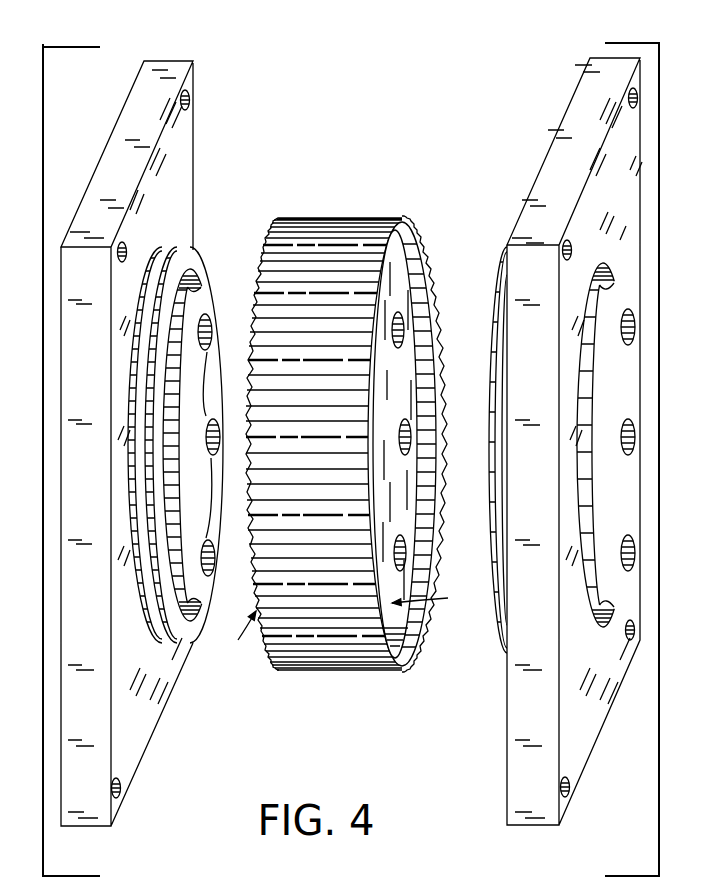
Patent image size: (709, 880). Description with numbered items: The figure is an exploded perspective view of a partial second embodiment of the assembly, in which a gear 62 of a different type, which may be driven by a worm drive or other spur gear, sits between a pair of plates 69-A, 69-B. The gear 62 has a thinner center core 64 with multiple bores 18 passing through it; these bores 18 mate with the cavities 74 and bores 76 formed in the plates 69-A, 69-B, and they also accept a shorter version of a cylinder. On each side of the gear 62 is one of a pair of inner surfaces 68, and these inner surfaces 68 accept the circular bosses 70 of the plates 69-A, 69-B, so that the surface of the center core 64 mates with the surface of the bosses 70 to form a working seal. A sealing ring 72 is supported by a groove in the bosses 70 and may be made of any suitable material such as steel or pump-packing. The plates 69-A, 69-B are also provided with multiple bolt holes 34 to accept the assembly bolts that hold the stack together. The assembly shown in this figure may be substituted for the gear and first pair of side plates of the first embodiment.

The bores 18 is at (404, 418).
The bolt holes 34 is at (190, 102).
The gear 62 is at (333, 671).
The center core 64 is at (423, 444).
The inner surfaces 68 is at (343, 628).
The plate 69-A is at (528, 214).
The plate 69-B is at (181, 234).
The circular bosses 70 is at (218, 527).
The sealing ring 72 is at (162, 643).
The cavities 74 is at (165, 470).
The bores 76 is at (211, 332).